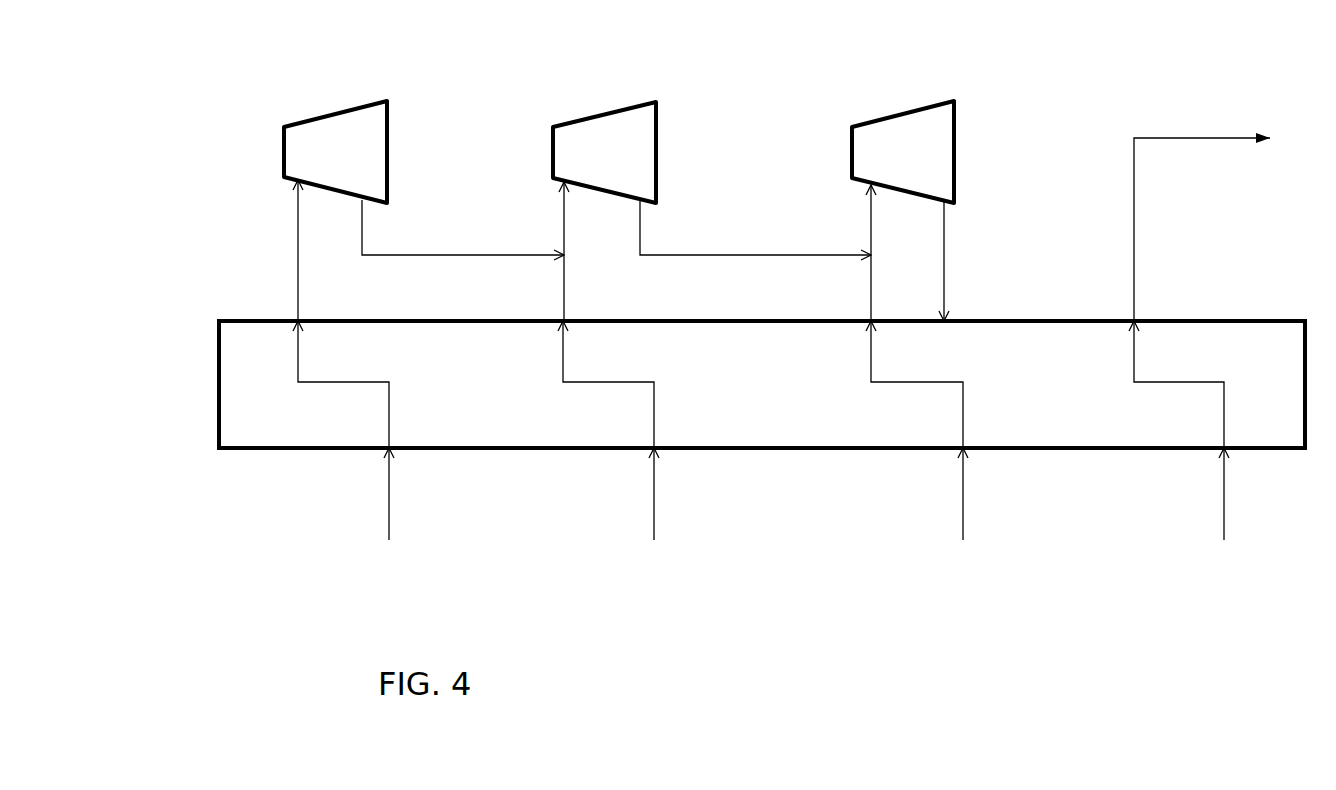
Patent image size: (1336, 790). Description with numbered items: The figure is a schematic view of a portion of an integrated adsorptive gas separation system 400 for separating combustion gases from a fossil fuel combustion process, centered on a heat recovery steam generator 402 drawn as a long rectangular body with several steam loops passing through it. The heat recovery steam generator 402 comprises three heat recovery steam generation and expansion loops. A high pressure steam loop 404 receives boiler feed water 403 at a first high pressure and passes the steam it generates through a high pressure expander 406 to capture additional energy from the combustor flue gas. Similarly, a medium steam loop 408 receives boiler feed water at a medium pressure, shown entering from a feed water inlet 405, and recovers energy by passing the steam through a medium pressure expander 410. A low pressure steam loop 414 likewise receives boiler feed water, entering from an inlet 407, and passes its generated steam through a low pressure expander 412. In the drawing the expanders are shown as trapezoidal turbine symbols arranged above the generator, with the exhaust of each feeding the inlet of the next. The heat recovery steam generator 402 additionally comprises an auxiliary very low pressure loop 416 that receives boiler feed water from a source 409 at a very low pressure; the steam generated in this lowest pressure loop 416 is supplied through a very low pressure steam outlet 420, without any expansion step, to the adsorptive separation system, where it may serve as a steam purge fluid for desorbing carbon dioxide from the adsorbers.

The integrated adsorptive gas separation system 400 is at (230, 86).
The heat recovery steam generator 402 is at (225, 462).
The boiler feed water 403 is at (405, 513).
The high pressure steam loop 404 is at (288, 367).
The boiler feed water inlet 405 is at (682, 513).
The high pressure expander 406 is at (265, 160).
The boiler feed water inlet 407 is at (985, 513).
The medium steam loop 408 is at (585, 392).
The boiler feed water source 409 is at (1245, 513).
The medium pressure expander 410 is at (545, 156).
The low pressure expander 412 is at (846, 148).
The low pressure steam loop 414 is at (905, 393).
The auxiliary very low pressure loop 416 is at (1153, 393).
The very low pressure steam outlet 420 is at (1212, 229).